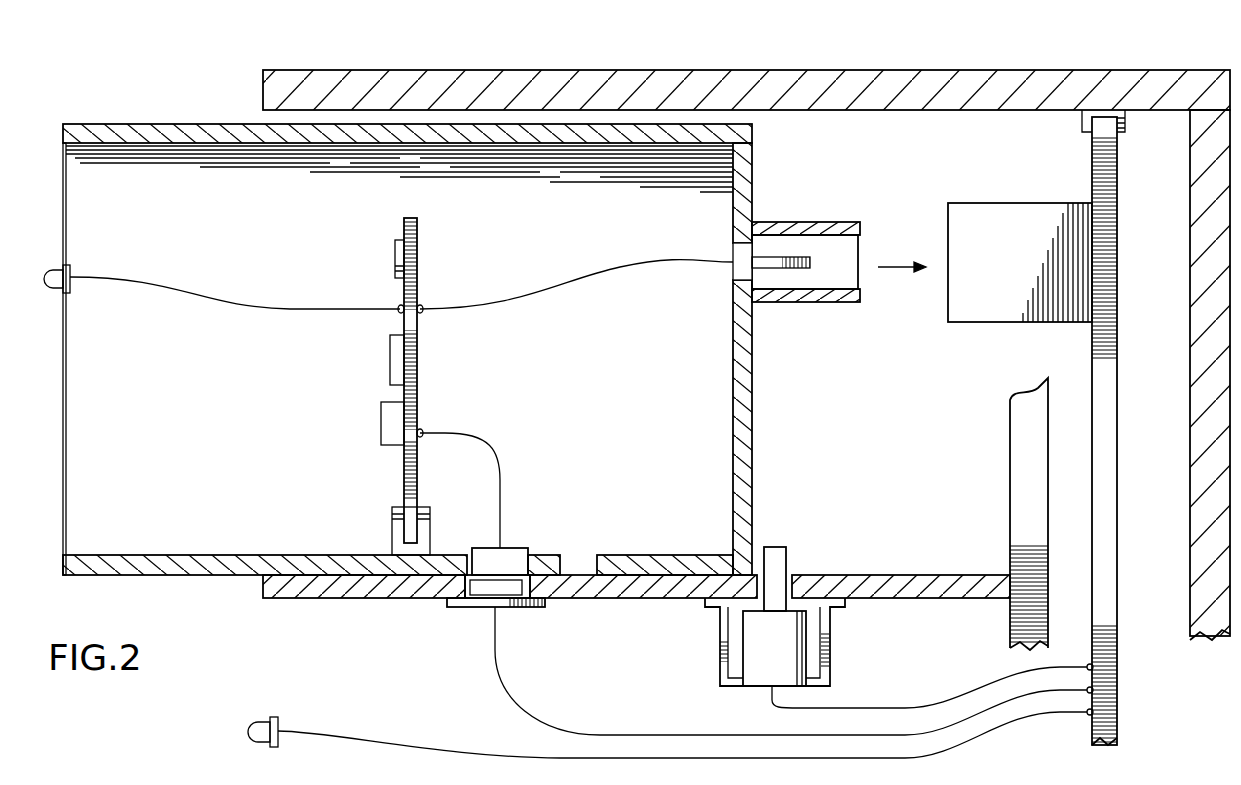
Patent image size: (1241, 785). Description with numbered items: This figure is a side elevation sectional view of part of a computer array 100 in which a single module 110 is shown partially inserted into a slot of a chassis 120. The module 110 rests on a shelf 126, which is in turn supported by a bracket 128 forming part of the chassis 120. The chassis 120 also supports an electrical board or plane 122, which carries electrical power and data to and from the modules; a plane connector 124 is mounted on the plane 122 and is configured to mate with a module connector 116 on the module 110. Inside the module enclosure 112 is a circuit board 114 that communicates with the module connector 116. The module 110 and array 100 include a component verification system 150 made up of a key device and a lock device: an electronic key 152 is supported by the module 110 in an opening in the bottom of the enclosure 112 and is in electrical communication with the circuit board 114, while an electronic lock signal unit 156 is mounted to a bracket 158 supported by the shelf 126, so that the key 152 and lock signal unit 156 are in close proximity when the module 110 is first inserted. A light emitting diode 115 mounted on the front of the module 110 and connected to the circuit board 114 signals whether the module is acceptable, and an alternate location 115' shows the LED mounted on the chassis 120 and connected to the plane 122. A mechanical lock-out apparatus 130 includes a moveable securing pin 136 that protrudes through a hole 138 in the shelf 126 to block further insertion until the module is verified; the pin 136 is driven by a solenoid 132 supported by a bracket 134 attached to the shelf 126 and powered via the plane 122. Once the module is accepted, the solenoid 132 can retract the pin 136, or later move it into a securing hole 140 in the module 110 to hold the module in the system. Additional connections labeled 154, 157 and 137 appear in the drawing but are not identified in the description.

The computer array 100 is at (620, 388).
The module 110 is at (137, 117).
The module enclosure 112 is at (270, 145).
The circuit board 114 is at (420, 232).
The light emitting diode 115 is at (205, 307).
The alternate indicator light position 115' is at (643, 716).
The module connector 116 is at (815, 304).
The chassis 120 is at (566, 64).
The plane 122 is at (1118, 425).
The plane connector 124 is at (1005, 203).
The shelf 126 is at (630, 590).
The bracket 128 is at (1010, 479).
The mechanical lock-out apparatus 130 is at (850, 601).
The solenoid 132 is at (755, 637).
The bracket 134 is at (832, 645).
The securing pin 136 is at (775, 547).
The wire 137 is at (772, 705).
The hole 138 is at (790, 575).
The securing hole 140 is at (577, 558).
The component verification system 150 is at (736, 579).
The electronic key 152 is at (515, 548).
The wire 154 is at (480, 452).
The lock signal unit 156 is at (490, 586).
The wire 157 is at (515, 706).
The bracket 158 is at (455, 608).